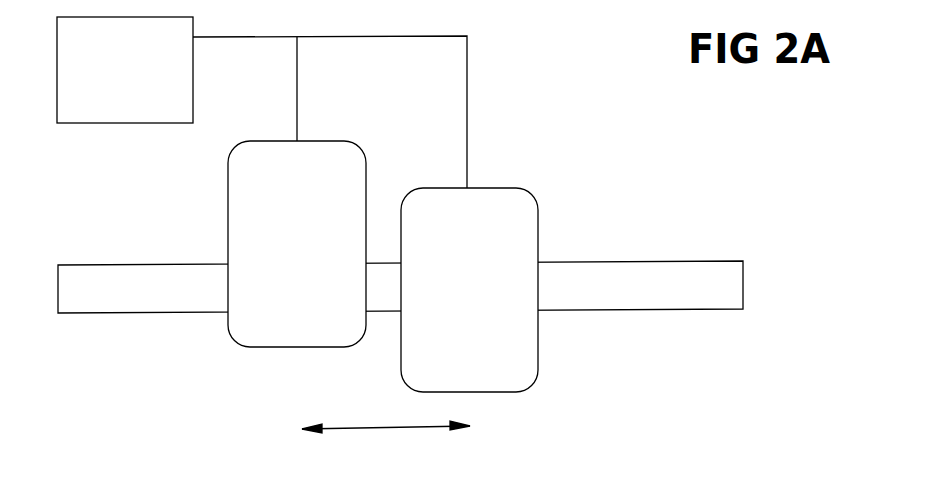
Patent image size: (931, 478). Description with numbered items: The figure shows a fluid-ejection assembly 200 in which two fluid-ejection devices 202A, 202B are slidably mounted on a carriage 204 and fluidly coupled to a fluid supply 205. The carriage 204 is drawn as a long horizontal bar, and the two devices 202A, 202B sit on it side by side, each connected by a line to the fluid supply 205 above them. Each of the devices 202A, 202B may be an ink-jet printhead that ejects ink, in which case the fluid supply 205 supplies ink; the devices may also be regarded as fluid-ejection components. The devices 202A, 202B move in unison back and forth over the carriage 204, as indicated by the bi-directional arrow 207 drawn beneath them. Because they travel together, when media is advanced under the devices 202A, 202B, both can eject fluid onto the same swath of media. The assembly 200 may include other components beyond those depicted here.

The fluid-ejection assembly 200 is at (751, 206).
The fluid supply 205 is at (105, 108).
The fluid-ejection device 202A is at (324, 252).
The fluid-ejection device 202B is at (496, 301).
The carriage 204 is at (104, 300).
The bi-directional arrow 207 is at (386, 441).